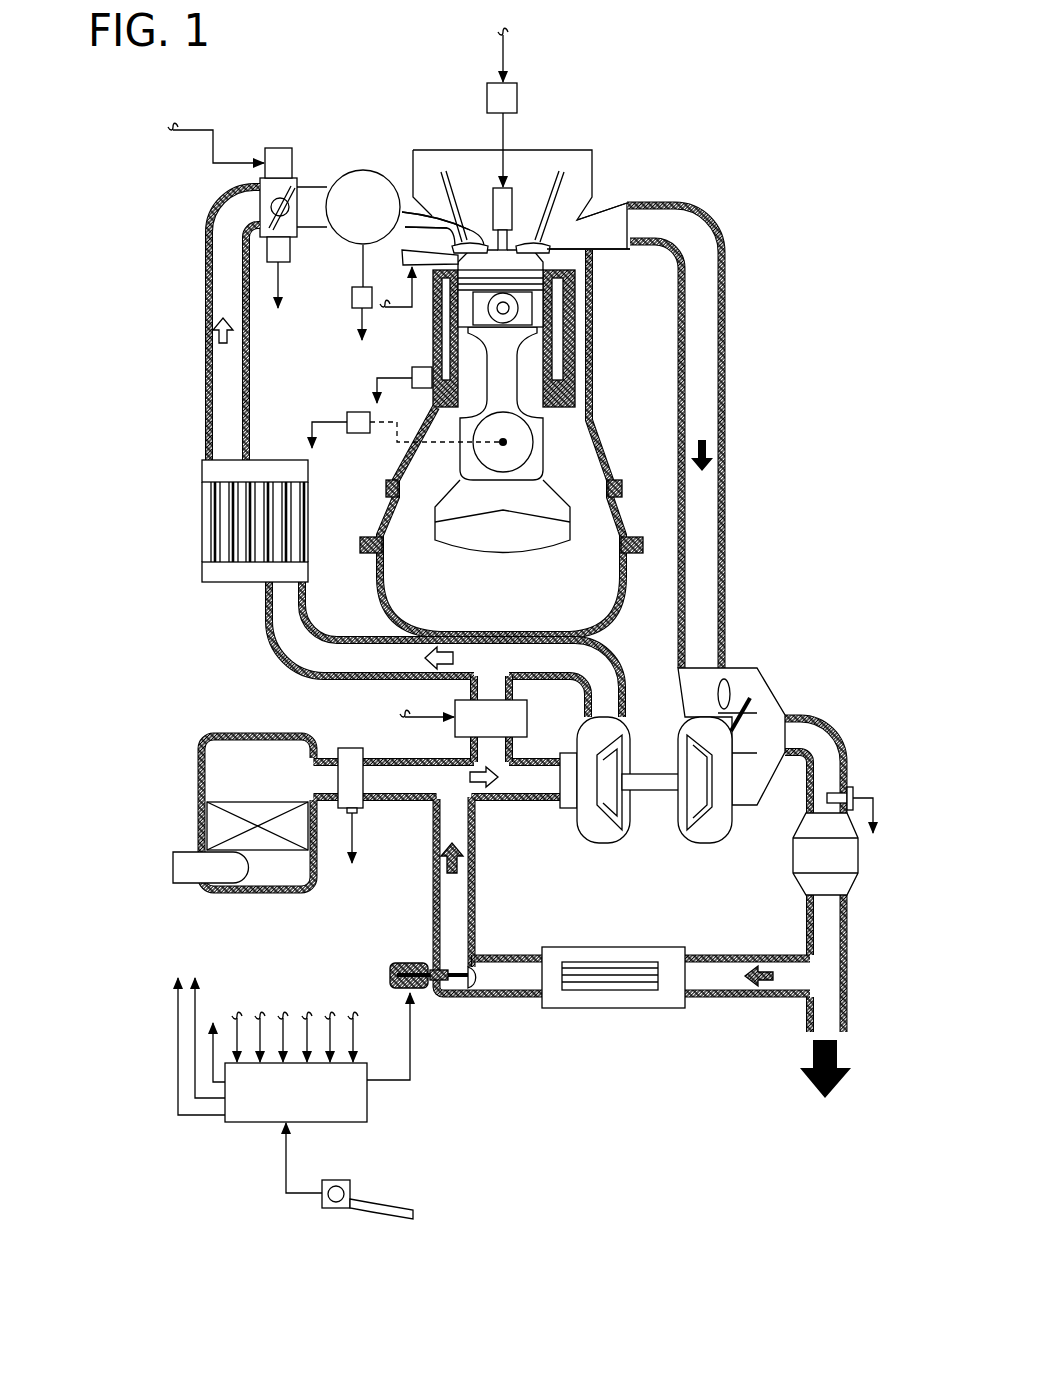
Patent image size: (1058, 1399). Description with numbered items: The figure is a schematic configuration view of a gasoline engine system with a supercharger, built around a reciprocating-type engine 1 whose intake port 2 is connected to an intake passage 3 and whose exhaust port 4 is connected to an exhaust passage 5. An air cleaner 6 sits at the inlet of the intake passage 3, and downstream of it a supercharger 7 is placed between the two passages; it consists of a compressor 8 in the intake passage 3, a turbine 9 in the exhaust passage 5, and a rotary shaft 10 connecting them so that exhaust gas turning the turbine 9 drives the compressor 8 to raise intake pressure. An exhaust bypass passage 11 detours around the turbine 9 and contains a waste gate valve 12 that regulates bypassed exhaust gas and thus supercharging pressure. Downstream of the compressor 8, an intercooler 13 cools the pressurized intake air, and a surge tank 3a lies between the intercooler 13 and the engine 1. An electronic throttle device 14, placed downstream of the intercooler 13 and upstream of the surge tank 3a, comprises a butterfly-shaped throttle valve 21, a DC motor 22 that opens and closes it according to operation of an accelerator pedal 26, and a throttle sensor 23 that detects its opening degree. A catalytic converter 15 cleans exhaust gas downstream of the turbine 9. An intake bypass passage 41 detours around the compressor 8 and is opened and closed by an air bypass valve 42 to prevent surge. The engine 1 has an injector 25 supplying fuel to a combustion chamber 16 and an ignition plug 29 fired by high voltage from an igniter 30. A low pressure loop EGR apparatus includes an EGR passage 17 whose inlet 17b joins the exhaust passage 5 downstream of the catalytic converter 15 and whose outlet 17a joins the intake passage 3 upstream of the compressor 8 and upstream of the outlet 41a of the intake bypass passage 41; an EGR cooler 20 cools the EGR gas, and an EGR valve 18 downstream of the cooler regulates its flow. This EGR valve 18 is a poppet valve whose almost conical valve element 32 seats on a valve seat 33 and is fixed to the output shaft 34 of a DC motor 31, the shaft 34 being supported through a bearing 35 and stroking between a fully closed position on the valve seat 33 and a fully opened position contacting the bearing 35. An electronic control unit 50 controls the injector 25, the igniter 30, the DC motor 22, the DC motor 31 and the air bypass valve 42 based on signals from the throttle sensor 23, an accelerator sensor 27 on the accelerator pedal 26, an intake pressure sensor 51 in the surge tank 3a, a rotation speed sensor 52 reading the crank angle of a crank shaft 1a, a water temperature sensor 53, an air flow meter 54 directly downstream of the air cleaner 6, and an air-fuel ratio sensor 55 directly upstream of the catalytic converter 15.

The engine 1 is at (590, 142).
The crank shaft 1a is at (513, 440).
The intake port 2 is at (405, 227).
The intake passage 3 is at (205, 375).
The surge tank 3a is at (343, 247).
The exhaust port 4 is at (585, 240).
The exhaust passage 5 is at (678, 388).
The air cleaner 6 is at (297, 893).
The supercharger 7 is at (688, 749).
The compressor 8 is at (613, 813).
The turbine 9 is at (700, 815).
The rotary shaft 10 is at (652, 775).
The exhaust bypass passage 11 is at (745, 668).
The waste gate valve 12 is at (753, 688).
The intercooler 13 is at (303, 495).
The electronic throttle device 14 is at (253, 203).
The catalytic converter 15 is at (793, 865).
The combustion chamber 16 is at (508, 262).
The EGR passage 17 is at (478, 875).
The outlet of the EGR passage 17a is at (440, 797).
The inlet of the EGR passage 17b is at (803, 987).
The EGR valve 18 is at (435, 997).
The EGR cooler 20 is at (598, 990).
The throttle valve 21 is at (262, 182).
The DC motor 22 is at (285, 148).
The throttle sensor 23 is at (278, 264).
The injector 25 is at (424, 268).
The accelerator pedal 26 is at (392, 1216).
The accelerator sensor 27 is at (336, 1208).
The ignition plug 29 is at (505, 190).
The igniter 30 is at (517, 98).
The DC motor 31 is at (393, 965).
The valve element 32 is at (480, 990).
The valve seat 33 is at (492, 956).
The output shaft 34 is at (433, 970).
The bearing 35 is at (440, 992).
The intake bypass passage 41 is at (512, 686).
The outlet of the intake bypass passage 41a is at (500, 766).
The air bypass valve 42 is at (527, 727).
The electronic control unit 50 is at (245, 1123).
The intake pressure sensor 51 is at (352, 298).
The rotation speed sensor 52 is at (355, 412).
The water temperature sensor 53 is at (412, 379).
The air flow meter 54 is at (352, 748).
The air-fuel ratio sensor 55 is at (850, 790).